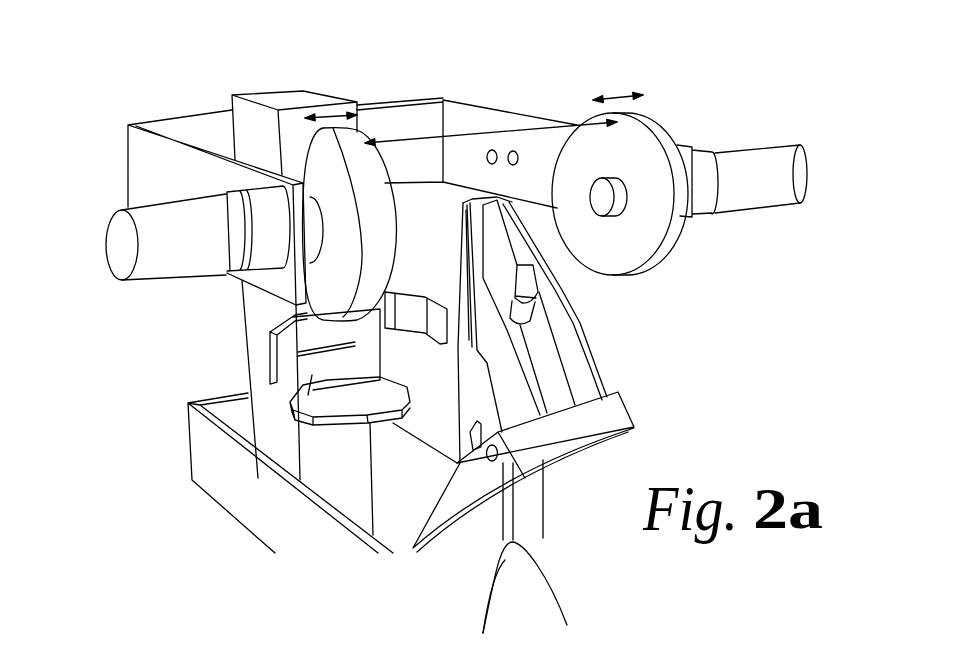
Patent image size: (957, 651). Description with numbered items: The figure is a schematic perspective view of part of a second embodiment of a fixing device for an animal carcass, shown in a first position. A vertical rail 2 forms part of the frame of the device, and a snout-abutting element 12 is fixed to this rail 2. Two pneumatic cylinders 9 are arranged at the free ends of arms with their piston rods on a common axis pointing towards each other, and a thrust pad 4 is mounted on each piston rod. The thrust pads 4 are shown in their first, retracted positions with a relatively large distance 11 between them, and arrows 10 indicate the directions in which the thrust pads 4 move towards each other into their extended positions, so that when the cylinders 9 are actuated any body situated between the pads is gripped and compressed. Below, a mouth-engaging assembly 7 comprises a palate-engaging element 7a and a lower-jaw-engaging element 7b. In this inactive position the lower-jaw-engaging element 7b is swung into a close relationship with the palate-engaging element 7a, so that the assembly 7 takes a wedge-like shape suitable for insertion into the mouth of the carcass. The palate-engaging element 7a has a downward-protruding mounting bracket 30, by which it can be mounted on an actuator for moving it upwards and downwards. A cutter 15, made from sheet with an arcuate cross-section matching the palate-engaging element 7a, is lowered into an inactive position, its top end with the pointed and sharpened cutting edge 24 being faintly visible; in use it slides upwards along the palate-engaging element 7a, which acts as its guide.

The vertical rail 2 is at (278, 100).
The thrust pad 4 is at (305, 162).
The mouth-engaging assembly 7 is at (624, 374).
The palate-engaging element 7a is at (490, 325).
The lower-jaw-engaging element 7b is at (528, 282).
The pneumatic cylinder 9 is at (180, 253).
The arrows indicating direction of thrust pad movement 10 is at (330, 114).
The distance between facing thrust pads 11 is at (418, 132).
The snout-abutting element 12 is at (323, 338).
The cutter 15 is at (528, 587).
The cutting edge 24 is at (490, 560).
The mounting bracket 30 is at (528, 518).